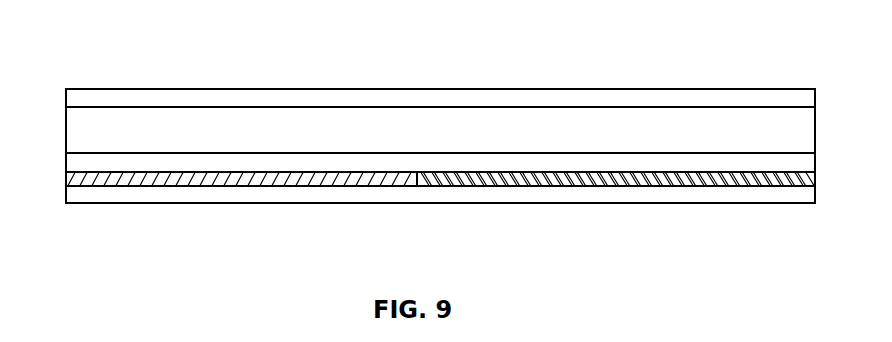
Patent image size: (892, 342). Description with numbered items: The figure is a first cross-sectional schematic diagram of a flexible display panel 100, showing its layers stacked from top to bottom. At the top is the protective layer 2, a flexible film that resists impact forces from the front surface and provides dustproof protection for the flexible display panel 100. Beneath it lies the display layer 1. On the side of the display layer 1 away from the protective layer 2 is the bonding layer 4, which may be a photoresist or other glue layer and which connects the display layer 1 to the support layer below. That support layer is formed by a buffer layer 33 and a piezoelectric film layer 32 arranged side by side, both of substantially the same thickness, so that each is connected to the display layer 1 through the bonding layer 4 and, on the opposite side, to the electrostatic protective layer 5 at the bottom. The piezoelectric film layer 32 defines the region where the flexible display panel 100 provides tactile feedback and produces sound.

The flexible display panel 100 is at (165, 46).
The display layer 1 is at (458, 132).
The protective layer 2 is at (261, 95).
The bonding layer 4 is at (86, 162).
The electrostatic protective layer 5 is at (520, 193).
The piezoelectric film layer 32 is at (627, 178).
The buffer layer 33 is at (318, 185).